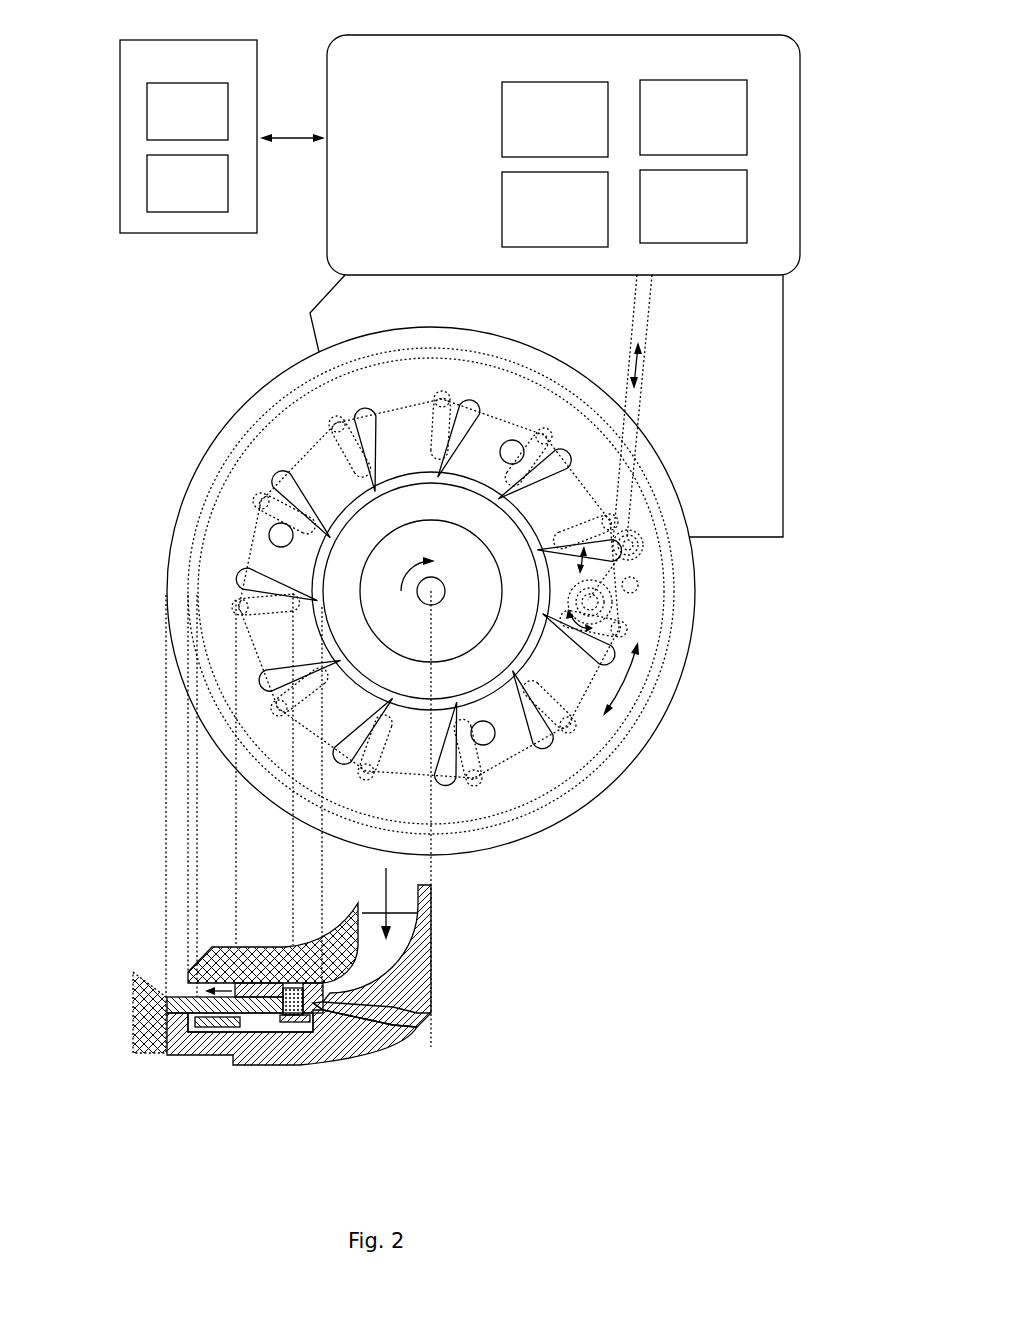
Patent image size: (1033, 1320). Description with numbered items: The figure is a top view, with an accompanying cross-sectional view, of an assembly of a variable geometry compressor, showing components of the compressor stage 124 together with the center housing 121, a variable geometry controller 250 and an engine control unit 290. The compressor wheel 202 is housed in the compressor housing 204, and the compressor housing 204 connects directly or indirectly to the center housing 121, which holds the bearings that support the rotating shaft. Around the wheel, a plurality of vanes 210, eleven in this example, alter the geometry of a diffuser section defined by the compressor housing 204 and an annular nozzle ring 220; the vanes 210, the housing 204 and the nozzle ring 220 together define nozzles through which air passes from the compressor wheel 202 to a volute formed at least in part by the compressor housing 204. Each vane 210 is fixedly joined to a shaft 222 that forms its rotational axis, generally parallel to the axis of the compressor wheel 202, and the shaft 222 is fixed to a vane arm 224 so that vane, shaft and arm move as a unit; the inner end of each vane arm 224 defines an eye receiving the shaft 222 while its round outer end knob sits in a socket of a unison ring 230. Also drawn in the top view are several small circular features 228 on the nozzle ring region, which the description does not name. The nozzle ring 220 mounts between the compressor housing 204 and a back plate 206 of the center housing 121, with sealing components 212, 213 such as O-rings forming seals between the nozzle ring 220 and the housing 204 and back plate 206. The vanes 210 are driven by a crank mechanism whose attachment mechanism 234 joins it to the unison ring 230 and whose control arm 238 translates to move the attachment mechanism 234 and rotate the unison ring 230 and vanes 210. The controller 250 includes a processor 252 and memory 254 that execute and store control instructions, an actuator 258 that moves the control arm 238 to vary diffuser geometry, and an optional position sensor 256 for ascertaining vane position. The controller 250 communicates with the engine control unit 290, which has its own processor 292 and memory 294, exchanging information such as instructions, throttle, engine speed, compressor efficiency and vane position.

The center housing 121 is at (562, 821).
The compressor stage 124 is at (185, 337).
The compressor wheel 202 is at (478, 627).
The compressor housing 204 is at (207, 962).
The back plate 206 is at (312, 1060).
The vane 210 is at (253, 582).
The sealing component 212 is at (392, 1044).
The sealing component 213 is at (143, 988).
The annular nozzle ring 220 is at (287, 582).
The shaft 222 is at (293, 1022).
The vane arm 224 is at (250, 562).
The mounting pin 228 is at (277, 531).
The unison ring 230 is at (645, 635).
The attachment mechanism 234 is at (628, 597).
The control arm 238 is at (627, 395).
The variable geometry controller 250 is at (389, 71).
The processor 252 is at (573, 134).
The memory 254 is at (573, 221).
The position sensor 256 is at (711, 132).
The actuator 258 is at (711, 217).
The engine control unit 290 is at (205, 72).
The processor 292 is at (205, 130).
The memory 294 is at (205, 197).